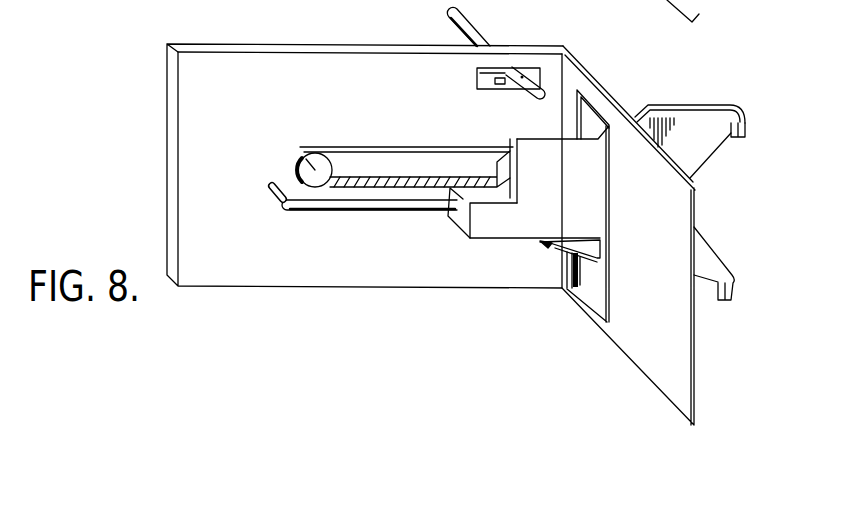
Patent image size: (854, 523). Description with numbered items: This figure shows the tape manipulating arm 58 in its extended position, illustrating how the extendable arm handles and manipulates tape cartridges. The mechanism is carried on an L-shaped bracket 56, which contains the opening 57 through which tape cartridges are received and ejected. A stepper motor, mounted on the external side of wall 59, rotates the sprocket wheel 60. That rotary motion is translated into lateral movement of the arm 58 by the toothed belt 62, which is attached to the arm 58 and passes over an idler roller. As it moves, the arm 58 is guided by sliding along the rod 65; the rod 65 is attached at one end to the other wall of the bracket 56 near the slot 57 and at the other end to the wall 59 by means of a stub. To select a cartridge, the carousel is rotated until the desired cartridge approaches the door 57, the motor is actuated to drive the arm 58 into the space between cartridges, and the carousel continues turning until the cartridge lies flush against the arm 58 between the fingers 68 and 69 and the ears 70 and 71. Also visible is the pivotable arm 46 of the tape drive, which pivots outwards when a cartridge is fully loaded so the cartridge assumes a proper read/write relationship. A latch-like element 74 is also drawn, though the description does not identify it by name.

The pivotable arm 46 is at (451, 13).
The L-shaped bracket 56 is at (303, 290).
The opening 57 is at (593, 282).
The tape manipulating arm 58 is at (687, 133).
The wall 59 is at (243, 70).
The sprocket wheel 60 is at (305, 150).
The toothed belt 62 is at (428, 156).
The rod 65 is at (356, 212).
The finger 68 is at (745, 128).
The finger 69 is at (738, 285).
The ear 70 is at (586, 135).
The ear 71 is at (553, 243).
The latch mechanism 74 is at (477, 80).